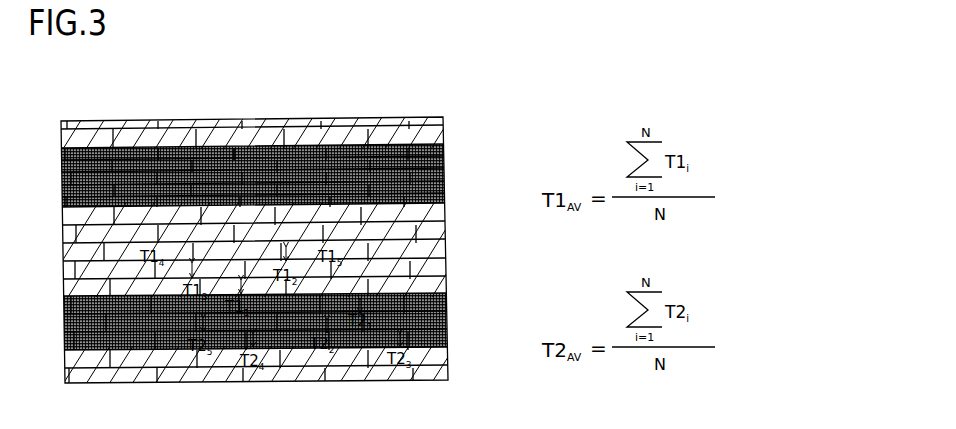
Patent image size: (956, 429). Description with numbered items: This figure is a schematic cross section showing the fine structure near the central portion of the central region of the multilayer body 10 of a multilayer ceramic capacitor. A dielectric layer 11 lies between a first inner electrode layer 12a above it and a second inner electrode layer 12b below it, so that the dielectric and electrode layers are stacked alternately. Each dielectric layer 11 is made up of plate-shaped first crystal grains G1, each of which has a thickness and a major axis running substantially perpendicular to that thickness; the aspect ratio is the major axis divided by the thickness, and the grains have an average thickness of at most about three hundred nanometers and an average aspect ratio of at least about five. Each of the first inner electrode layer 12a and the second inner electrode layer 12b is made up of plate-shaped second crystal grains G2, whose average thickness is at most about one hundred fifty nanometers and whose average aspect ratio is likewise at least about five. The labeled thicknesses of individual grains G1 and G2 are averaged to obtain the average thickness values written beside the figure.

The multilayer body 10 is at (400, 107).
The dielectric layer 11 is at (450, 247).
The first inner electrode layer 12a is at (451, 172).
The second inner electrode layer 12b is at (453, 331).
The first crystal grain G1 is at (250, 165).
The second crystal grain G2 is at (167, 148).